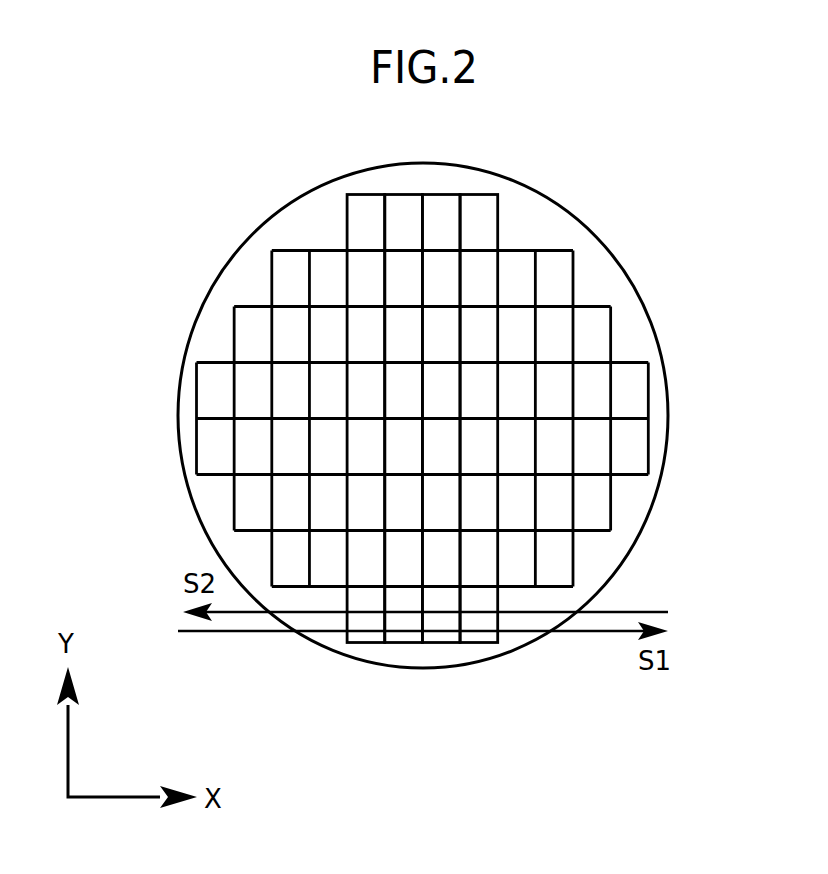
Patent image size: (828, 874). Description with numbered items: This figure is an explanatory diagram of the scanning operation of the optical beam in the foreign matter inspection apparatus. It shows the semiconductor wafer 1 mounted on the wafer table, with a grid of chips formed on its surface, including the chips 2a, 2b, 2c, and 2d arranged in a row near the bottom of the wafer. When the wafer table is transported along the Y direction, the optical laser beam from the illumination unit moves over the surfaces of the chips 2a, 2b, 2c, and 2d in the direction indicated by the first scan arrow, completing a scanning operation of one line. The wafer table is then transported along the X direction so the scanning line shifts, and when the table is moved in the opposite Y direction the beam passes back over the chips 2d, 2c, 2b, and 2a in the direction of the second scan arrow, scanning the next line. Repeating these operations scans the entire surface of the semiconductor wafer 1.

The semiconductor wafer 1 is at (180, 424).
The chip 2a is at (365, 643).
The chip 2b is at (402, 643).
The chip 2c is at (438, 643).
The chip 2d is at (477, 643).